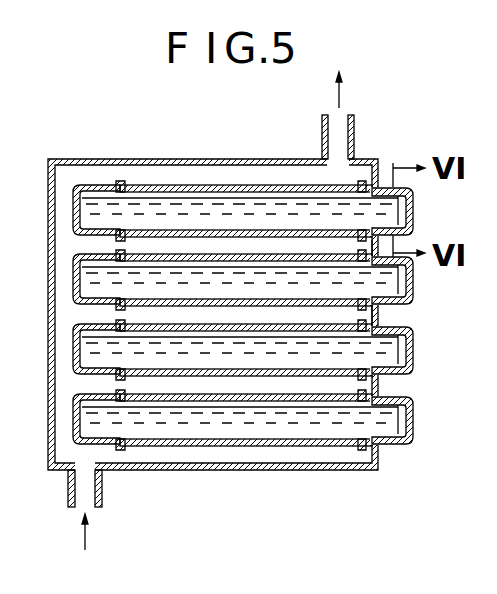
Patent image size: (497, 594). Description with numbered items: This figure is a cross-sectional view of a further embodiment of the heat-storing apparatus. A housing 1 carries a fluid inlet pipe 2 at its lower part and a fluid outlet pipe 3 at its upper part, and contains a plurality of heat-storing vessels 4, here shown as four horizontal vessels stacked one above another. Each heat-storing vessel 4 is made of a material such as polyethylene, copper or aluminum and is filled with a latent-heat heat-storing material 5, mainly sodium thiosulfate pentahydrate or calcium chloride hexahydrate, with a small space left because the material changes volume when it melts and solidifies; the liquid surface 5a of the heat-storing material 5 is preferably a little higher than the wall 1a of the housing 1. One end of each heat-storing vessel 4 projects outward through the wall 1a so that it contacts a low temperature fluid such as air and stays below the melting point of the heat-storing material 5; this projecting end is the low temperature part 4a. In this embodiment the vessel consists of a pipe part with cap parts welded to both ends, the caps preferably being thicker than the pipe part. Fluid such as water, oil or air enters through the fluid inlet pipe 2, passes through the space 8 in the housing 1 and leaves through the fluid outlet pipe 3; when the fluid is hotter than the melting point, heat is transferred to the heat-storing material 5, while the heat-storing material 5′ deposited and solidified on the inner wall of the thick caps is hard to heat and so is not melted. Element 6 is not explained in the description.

The housing 1 is at (50, 325).
The wall of housing 1a is at (376, 322).
The fluid inlet pipe 2 is at (103, 487).
The fluid outlet pipe 3 is at (354, 140).
The heat-storing vessel 4 is at (270, 183).
The low temperature part 4a is at (404, 217).
The heat-storing material 5 is at (242, 212).
The liquid surface of heat-storing material 5a is at (197, 204).
The heat-storing material deposited on cap inner wall 5′ is at (413, 208).
The partition wall 6 is at (152, 197).
The space in housing 8 is at (93, 387).